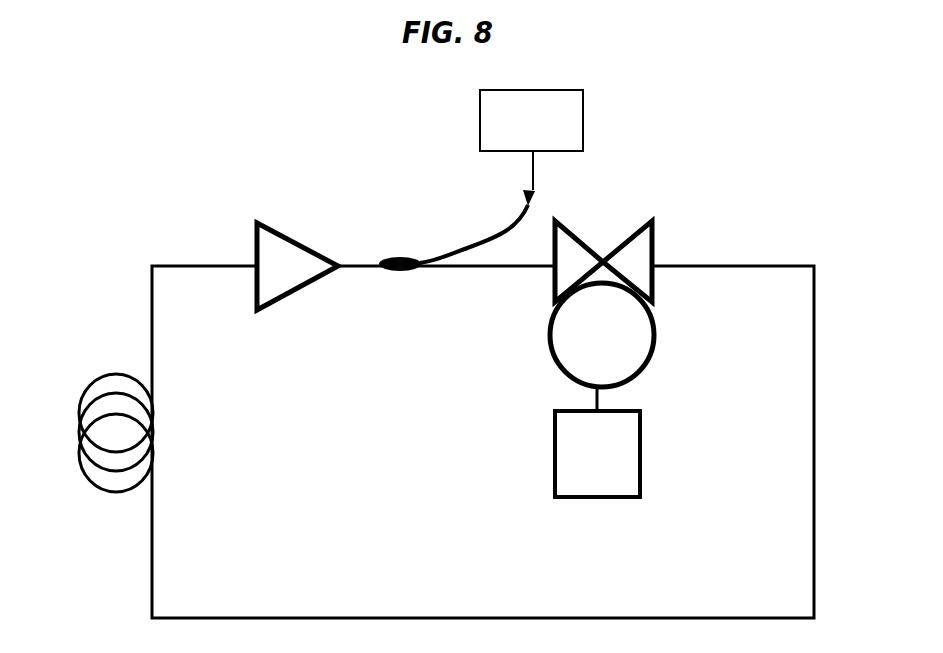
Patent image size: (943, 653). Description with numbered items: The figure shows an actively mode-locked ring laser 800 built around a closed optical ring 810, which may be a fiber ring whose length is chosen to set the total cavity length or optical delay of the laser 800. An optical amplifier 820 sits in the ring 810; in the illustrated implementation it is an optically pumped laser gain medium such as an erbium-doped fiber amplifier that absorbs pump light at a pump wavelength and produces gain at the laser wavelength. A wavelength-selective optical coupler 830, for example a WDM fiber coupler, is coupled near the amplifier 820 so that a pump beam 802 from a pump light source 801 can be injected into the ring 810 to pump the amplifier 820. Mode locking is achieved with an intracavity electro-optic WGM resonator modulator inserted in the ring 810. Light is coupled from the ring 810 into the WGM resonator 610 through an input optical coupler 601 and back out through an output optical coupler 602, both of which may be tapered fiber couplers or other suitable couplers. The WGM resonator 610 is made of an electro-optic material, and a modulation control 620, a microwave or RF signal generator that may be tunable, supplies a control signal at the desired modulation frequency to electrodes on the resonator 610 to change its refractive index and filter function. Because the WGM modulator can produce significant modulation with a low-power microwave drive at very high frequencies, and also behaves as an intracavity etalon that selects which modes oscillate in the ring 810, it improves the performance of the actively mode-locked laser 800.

The actively mode-locked ring laser 800 is at (288, 102).
The pump light source 801 is at (531, 120).
The pump beam 802 is at (490, 237).
The closed optical ring 810 is at (134, 570).
The optical amplifier 820 is at (288, 278).
The wavelength-selective optical coupler 830 is at (402, 272).
The input optical coupler 601 is at (552, 279).
The output optical coupler 602 is at (652, 285).
The WGM resonator 610 is at (602, 335).
The modulation control 620 is at (589, 475).